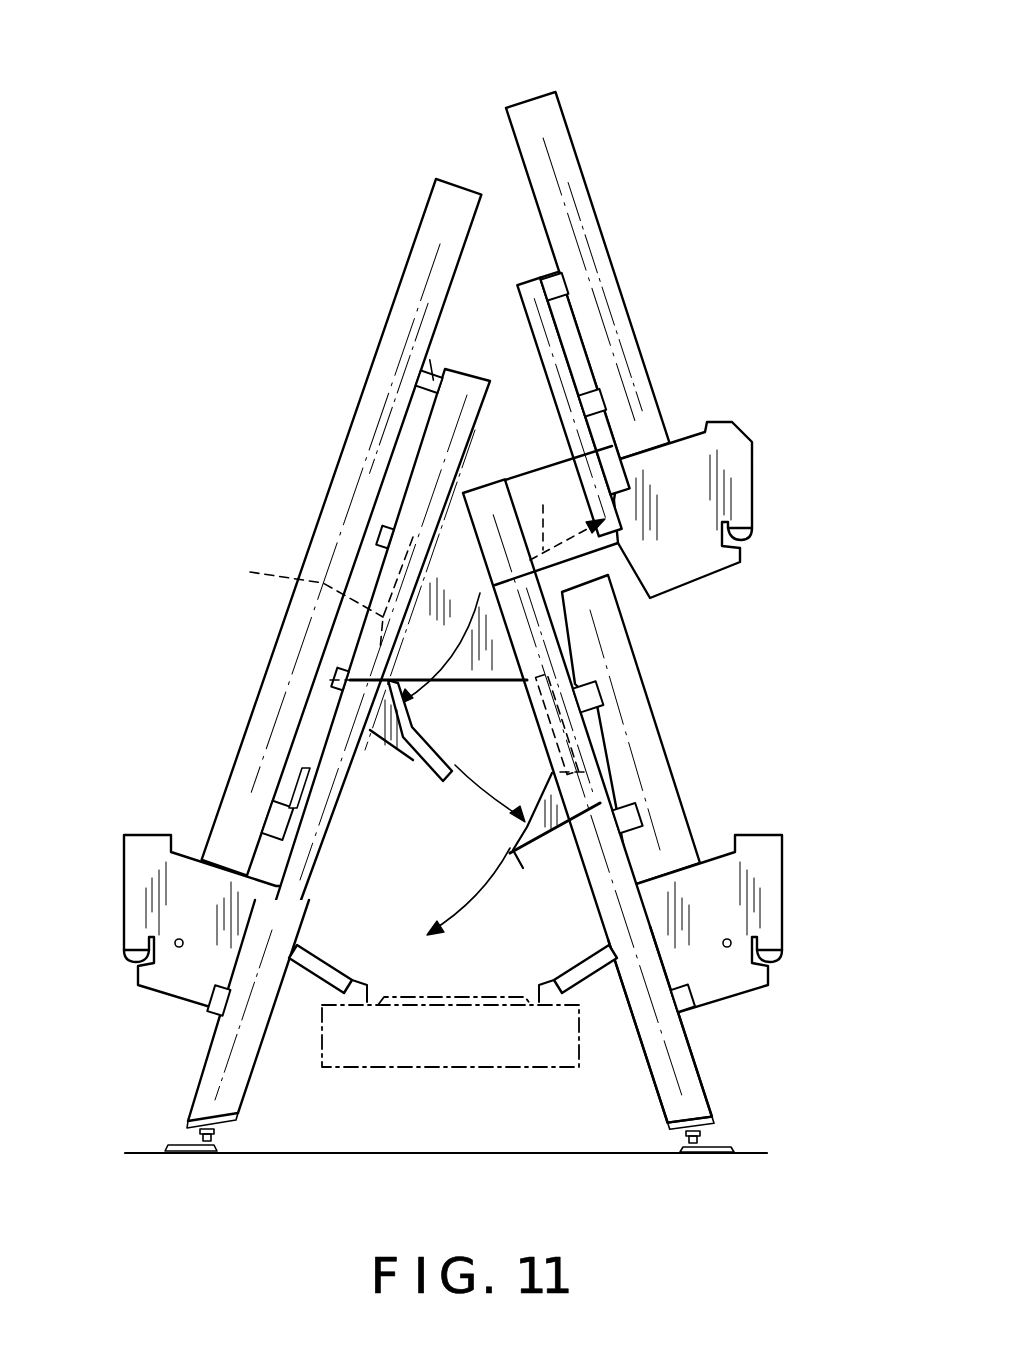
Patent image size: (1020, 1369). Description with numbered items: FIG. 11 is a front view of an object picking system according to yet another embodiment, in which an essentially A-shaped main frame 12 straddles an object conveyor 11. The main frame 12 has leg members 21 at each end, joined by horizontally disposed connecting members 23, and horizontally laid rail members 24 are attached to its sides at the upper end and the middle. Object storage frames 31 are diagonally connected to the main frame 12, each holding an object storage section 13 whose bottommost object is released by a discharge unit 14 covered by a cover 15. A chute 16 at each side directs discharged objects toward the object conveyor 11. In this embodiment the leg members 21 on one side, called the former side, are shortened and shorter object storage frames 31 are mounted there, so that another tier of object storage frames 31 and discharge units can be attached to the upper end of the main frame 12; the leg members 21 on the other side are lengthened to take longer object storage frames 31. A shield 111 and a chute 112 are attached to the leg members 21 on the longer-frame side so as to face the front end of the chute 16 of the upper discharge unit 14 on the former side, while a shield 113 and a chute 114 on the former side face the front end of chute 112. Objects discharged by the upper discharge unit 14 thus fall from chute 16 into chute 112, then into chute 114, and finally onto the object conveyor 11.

The object conveyor 11 is at (455, 997).
The main frame 12 is at (322, 745).
The object storage section 13 is at (530, 98).
The discharge unit 14 is at (680, 497).
The cover 15 is at (737, 458).
The chute 16 is at (338, 962).
The leg member 21 is at (213, 1088).
The connecting member 23 is at (378, 535).
The rail member 24 is at (548, 282).
The object storage frame 31 is at (633, 298).
The shield 111 is at (347, 621).
The chute 112 is at (413, 756).
The shield 113 is at (540, 693).
The chute 114 is at (546, 852).